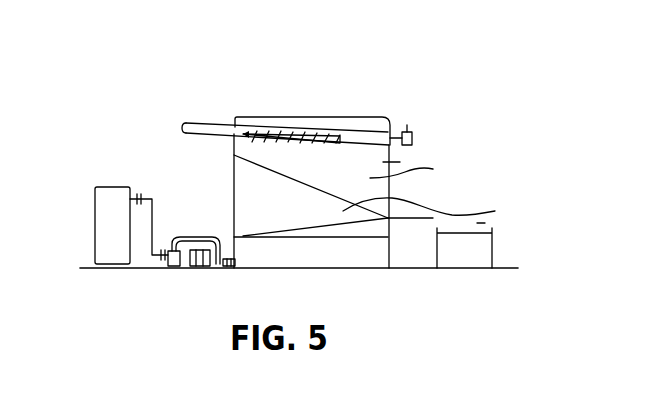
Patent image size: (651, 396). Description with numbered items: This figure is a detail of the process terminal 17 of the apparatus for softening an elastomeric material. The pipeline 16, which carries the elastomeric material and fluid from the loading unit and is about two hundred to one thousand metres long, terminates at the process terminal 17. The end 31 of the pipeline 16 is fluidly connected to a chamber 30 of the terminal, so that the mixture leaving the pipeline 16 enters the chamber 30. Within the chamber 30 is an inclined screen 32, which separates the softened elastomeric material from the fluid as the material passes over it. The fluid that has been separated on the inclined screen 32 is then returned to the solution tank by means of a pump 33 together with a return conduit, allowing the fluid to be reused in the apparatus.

The pipeline 16 is at (183, 132).
The process terminal 17 is at (398, 80).
The chamber 30 is at (429, 169).
The end of pipeline 31 is at (241, 117).
The inclined screen 32 is at (445, 199).
The pump 33 is at (113, 247).